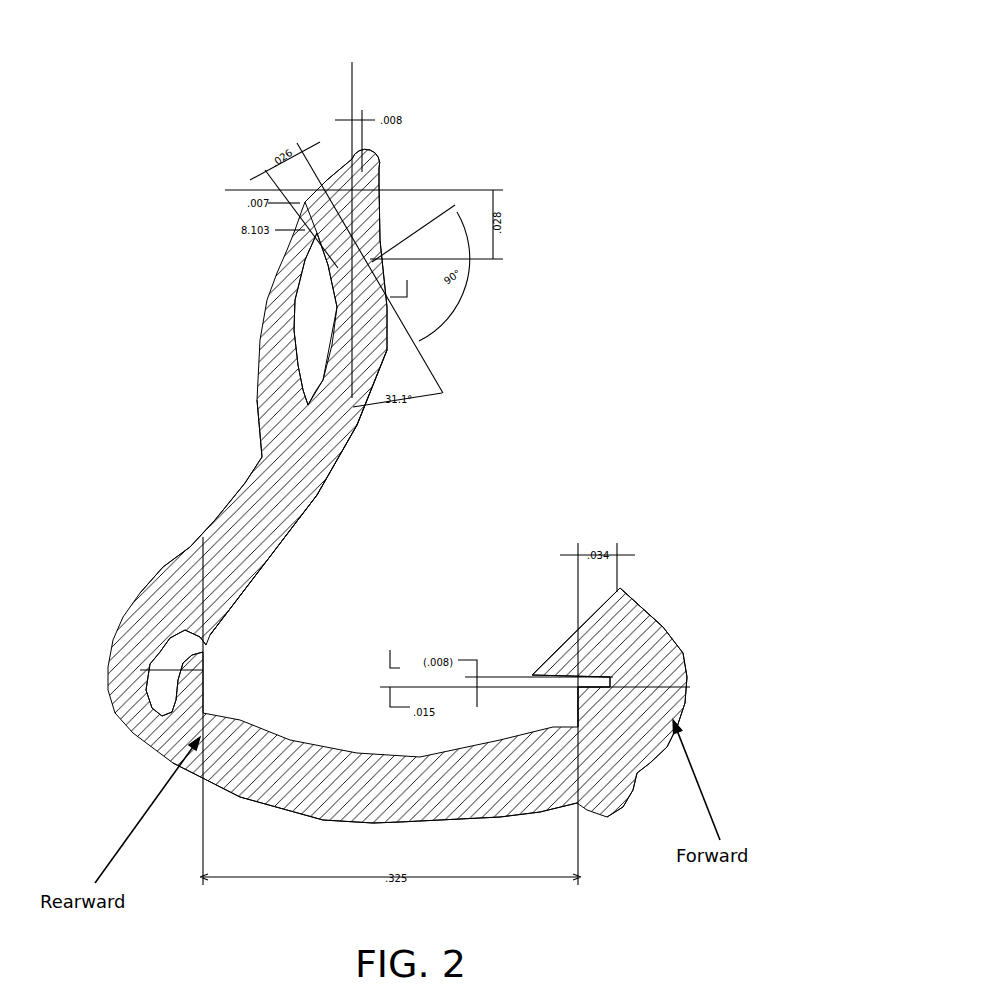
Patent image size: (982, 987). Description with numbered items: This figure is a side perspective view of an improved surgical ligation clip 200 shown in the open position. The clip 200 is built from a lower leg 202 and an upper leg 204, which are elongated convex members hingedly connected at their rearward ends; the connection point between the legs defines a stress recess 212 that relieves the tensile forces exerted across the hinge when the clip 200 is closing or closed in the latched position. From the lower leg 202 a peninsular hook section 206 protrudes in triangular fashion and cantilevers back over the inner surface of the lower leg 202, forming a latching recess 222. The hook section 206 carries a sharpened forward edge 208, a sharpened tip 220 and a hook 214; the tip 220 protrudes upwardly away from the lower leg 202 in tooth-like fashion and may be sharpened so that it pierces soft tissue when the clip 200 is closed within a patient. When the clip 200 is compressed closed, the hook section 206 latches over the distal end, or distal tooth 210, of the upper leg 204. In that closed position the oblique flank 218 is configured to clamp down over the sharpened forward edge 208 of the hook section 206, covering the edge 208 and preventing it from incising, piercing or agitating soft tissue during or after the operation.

The surgical ligation clip 200 is at (88, 68).
The lower leg 202 is at (452, 803).
The upper leg 204 is at (214, 502).
The hook section 206 is at (708, 690).
The sharpened forward edge 208 is at (667, 630).
The distal tooth 210 is at (362, 293).
The stress recess 212 is at (148, 680).
The hook 214 is at (572, 630).
The oblique flank 218 is at (302, 250).
The sharpened tip 220 is at (210, 635).
The latching recess 222 is at (587, 693).